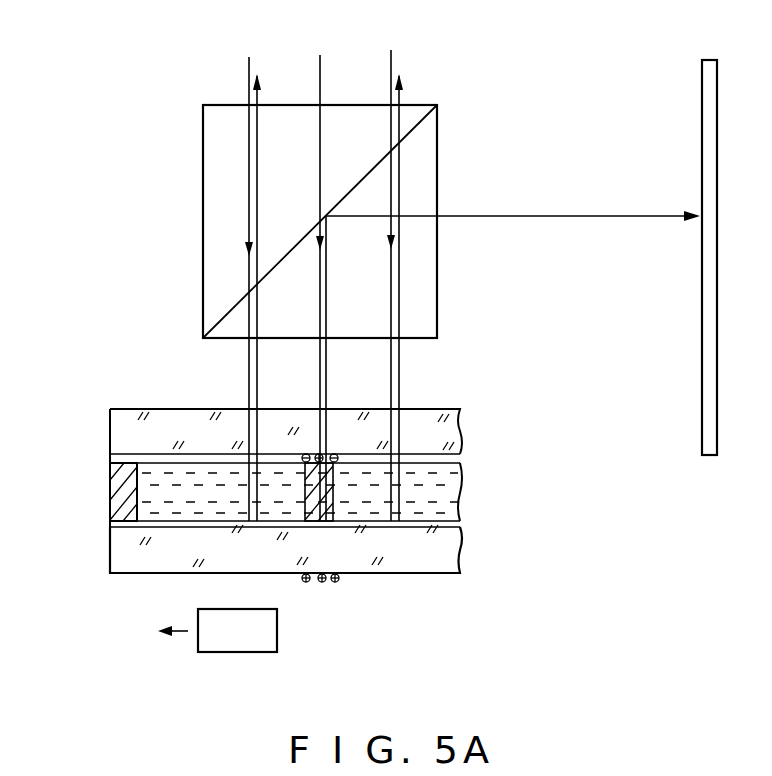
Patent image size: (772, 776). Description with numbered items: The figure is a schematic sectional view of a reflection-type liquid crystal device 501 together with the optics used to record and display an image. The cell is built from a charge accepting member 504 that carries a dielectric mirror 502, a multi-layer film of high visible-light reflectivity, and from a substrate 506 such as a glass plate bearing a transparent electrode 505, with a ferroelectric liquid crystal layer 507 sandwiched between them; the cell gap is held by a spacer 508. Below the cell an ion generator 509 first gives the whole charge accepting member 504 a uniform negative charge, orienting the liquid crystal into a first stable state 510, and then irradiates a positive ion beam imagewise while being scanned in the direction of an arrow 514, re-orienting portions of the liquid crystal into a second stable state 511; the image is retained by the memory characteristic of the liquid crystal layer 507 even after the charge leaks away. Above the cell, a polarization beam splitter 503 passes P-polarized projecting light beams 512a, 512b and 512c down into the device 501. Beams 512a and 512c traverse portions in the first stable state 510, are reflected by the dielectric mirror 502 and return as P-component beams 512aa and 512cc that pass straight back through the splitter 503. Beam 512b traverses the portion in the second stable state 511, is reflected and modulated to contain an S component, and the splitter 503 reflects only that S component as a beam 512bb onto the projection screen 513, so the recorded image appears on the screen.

The liquid crystal device 501 is at (478, 400).
The dielectric mirror 502 is at (458, 525).
The polarization beam splitter 503 is at (186, 178).
The charge accepting member 504 is at (458, 550).
The transparent electrode 505 is at (458, 458).
The substrate 506 is at (131, 420).
The liquid crystal layer 507 is at (458, 495).
The spacer 508 is at (118, 497).
The ion generator 509 is at (370, 677).
The first stable state 510 is at (178, 508).
The second stable state 511 is at (333, 508).
The projecting light beam 512a is at (248, 72).
The reflected light beam 512aa is at (254, 88).
The projecting light beam 512b is at (318, 68).
The S-component beam 512bb is at (553, 212).
The projecting light beam 512c is at (390, 70).
The reflected light beam 512cc is at (404, 96).
The projection screen 513 is at (704, 111).
The arrow 514 is at (170, 634).